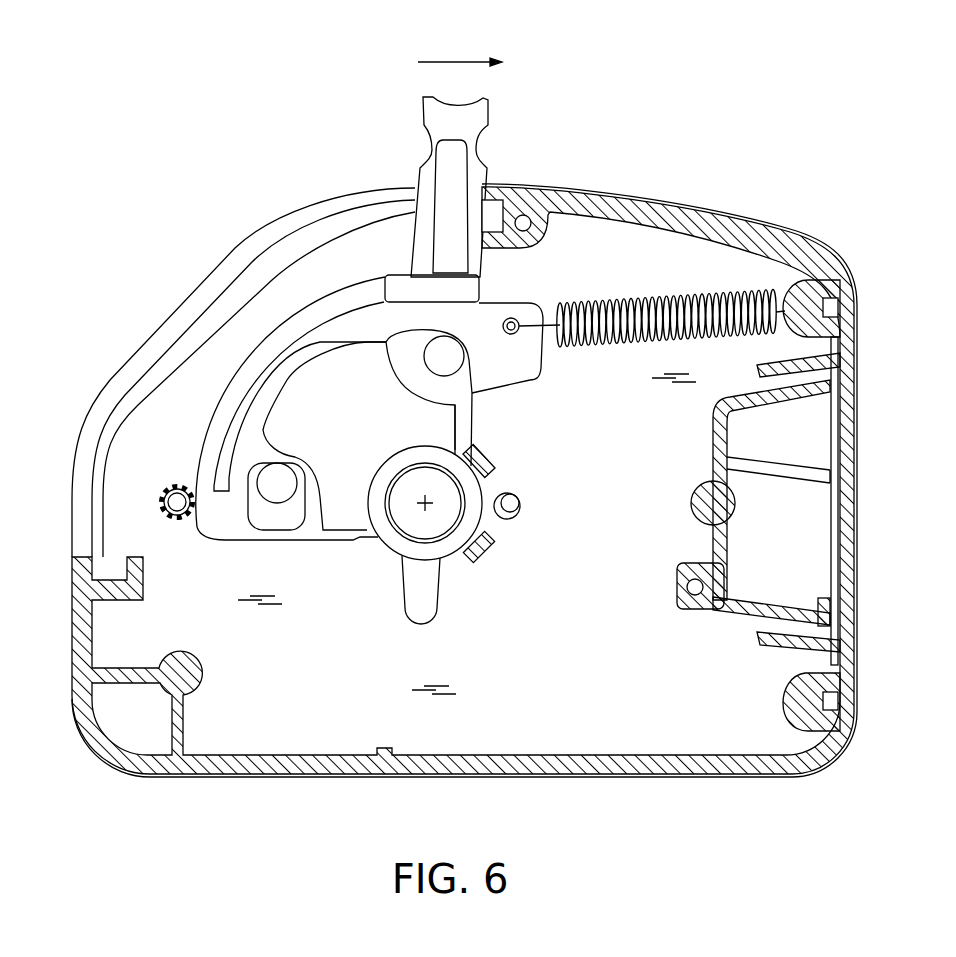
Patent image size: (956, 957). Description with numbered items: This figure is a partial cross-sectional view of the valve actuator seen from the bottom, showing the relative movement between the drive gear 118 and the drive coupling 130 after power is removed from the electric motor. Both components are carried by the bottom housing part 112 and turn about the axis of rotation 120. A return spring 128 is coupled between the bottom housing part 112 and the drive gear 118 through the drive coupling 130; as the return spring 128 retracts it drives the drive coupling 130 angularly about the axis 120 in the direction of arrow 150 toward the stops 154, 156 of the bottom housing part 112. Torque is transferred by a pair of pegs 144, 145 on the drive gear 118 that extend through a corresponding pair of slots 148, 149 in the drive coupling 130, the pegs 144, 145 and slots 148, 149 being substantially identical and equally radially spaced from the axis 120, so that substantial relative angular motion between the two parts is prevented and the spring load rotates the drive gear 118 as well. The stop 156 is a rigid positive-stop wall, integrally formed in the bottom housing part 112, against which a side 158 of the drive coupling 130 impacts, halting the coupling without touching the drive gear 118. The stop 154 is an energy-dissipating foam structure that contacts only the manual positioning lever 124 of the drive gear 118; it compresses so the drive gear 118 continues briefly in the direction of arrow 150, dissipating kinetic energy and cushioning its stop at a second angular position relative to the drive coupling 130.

The bottom housing part 112 is at (680, 772).
The drive gear 118 is at (255, 347).
The axis of rotation 120 is at (422, 506).
The manual positioning lever 124 is at (448, 100).
The return spring 128 is at (675, 297).
The drive coupling 130 is at (270, 415).
The peg 144 is at (263, 485).
The peg 145 is at (450, 350).
The slot 148 is at (263, 513).
The slot 149 is at (408, 353).
The arrow 150 is at (448, 62).
The stop 154 is at (497, 213).
The stop 156 is at (480, 457).
The side 158 is at (473, 433).